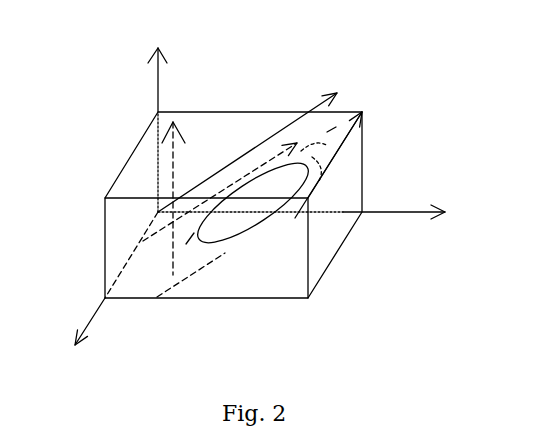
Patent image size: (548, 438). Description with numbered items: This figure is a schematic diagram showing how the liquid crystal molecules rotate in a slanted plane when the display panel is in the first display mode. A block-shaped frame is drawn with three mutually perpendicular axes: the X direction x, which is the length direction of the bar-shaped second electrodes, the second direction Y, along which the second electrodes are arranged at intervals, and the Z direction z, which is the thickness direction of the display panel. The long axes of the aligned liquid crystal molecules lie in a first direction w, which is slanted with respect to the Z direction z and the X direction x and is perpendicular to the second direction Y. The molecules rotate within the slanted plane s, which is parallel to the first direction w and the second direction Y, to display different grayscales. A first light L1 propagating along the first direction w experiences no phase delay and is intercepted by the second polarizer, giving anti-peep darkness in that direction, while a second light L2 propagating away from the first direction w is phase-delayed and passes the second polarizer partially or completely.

The first light L1 is at (249, 174).
The second light L2 is at (170, 173).
The slanted plane s is at (345, 140).
The first direction w is at (255, 149).
The X direction x is at (308, 211).
The second direction Y is at (110, 289).
The Z direction z is at (157, 123).